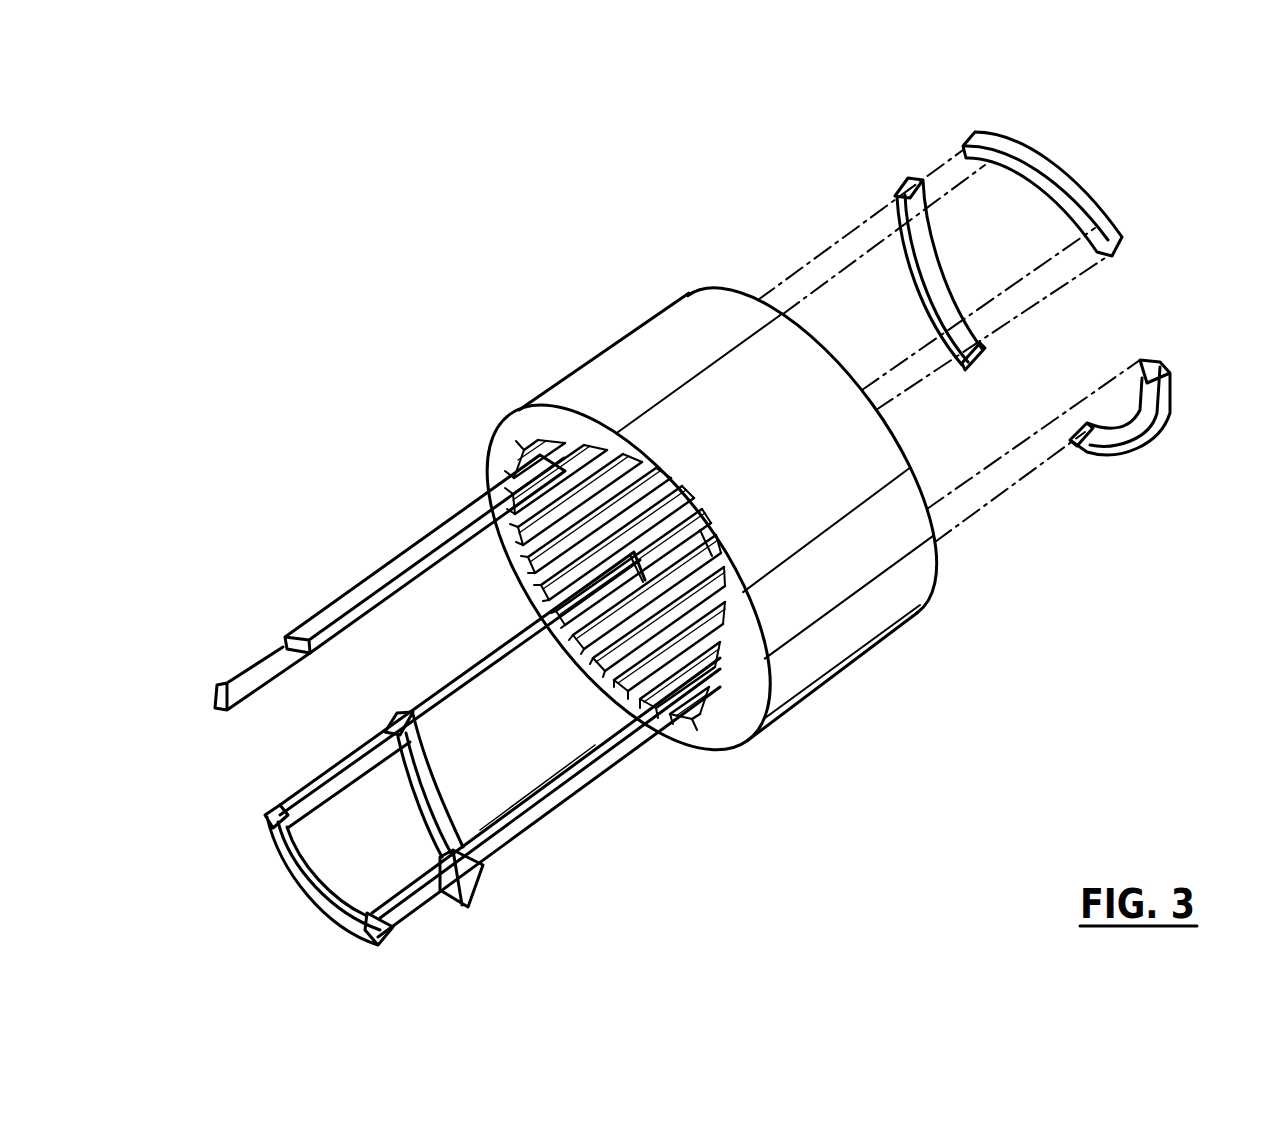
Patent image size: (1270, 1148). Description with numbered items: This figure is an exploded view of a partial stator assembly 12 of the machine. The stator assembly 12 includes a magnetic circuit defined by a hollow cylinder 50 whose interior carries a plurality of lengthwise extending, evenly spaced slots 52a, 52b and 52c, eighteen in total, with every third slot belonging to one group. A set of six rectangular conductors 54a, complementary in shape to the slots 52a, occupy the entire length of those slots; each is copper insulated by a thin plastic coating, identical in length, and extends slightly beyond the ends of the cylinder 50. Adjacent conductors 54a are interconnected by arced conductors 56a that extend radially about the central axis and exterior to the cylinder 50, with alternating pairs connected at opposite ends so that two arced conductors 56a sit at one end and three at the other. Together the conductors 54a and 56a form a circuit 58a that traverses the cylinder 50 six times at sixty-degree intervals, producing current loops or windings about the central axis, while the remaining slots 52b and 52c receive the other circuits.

The stator assembly 12 is at (571, 293).
The hollow cylinder 50 is at (877, 632).
The slots 52a is at (687, 525).
The slots 52b is at (718, 562).
The slots 52c is at (748, 608).
The rectangular conductors 54a is at (422, 545).
The arced conductors 56a is at (1080, 183).
The circuit 58a is at (560, 842).